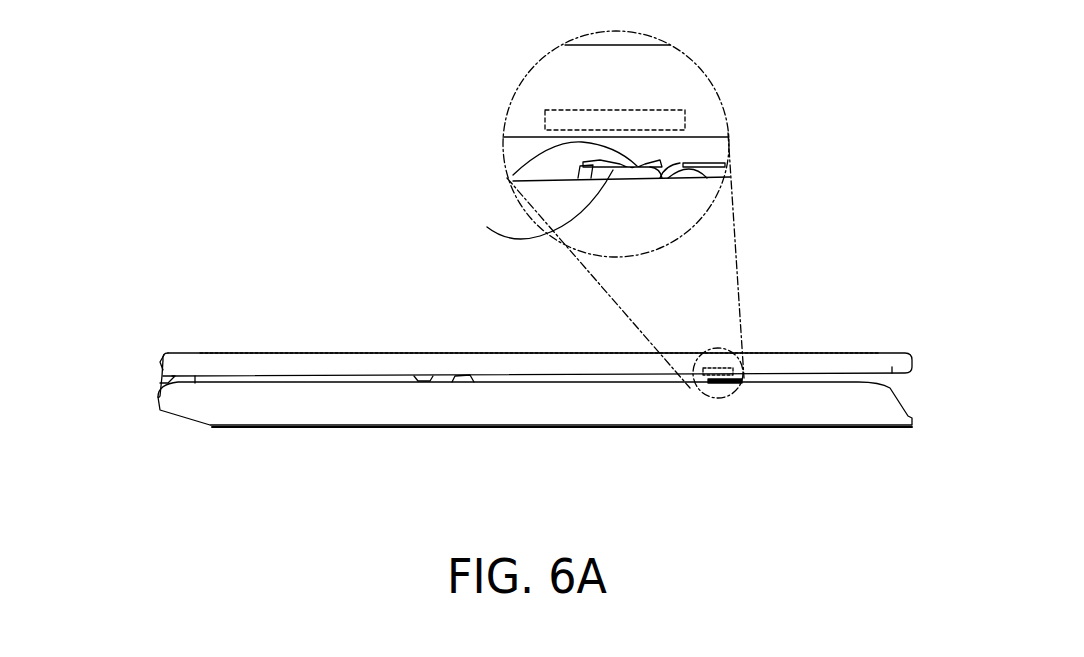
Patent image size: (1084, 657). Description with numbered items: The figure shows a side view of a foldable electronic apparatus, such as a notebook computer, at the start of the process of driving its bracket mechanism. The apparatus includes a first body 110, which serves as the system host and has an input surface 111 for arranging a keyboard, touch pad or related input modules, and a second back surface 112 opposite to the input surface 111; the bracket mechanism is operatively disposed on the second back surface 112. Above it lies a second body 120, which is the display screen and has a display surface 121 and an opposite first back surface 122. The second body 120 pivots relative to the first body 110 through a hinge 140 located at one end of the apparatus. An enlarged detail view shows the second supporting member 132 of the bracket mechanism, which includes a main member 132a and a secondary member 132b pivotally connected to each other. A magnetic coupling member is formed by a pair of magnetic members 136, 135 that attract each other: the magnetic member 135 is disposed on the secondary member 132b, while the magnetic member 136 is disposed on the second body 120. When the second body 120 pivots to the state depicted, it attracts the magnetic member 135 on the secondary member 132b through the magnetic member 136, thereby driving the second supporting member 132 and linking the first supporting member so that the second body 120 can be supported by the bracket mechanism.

The first body 110 is at (817, 413).
The input surface 111 is at (555, 425).
The second back surface 112 is at (458, 378).
The second body 120 is at (877, 364).
The display surface 121 is at (548, 354).
The first back surface 122 is at (431, 377).
The second supporting member 132 is at (127, 3).
The main member 132a is at (714, 164).
The secondary member 132b is at (512, 237).
The magnetic member 135 is at (508, 179).
The magnetic member 136 is at (684, 126).
The hinge 140 is at (160, 383).